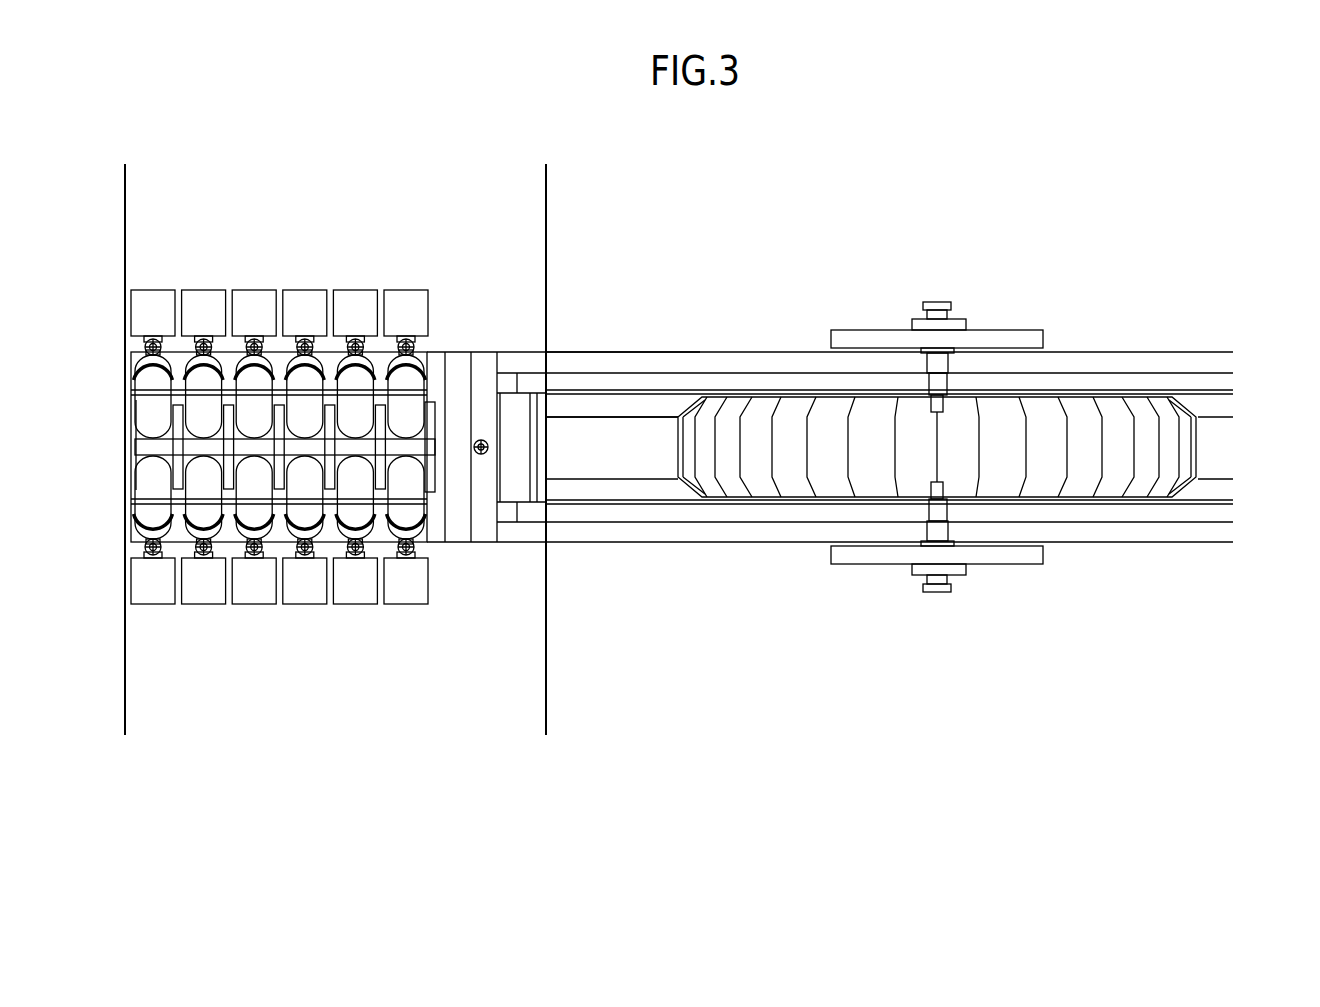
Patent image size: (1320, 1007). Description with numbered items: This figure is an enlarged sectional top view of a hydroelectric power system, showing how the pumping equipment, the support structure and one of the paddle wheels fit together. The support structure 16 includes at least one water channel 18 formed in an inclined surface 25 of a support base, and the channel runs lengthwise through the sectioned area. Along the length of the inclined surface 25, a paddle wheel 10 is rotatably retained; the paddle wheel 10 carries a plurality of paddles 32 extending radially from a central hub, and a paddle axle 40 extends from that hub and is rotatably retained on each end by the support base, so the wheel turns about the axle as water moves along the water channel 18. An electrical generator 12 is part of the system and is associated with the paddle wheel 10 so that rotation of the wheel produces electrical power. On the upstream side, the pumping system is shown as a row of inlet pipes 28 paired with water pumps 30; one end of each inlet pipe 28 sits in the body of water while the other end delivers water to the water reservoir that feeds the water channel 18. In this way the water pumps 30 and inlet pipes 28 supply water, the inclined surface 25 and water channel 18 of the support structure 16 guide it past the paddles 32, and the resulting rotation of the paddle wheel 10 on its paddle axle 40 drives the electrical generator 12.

The paddle wheel 10 is at (742, 503).
The electrical generator 12 is at (882, 330).
The support structure 16 is at (674, 335).
The water channel 18 is at (622, 447).
The inclined surface 25 is at (642, 657).
The inlet pipe 28 is at (203, 397).
The water pump 30 is at (298, 303).
The paddle 32 is at (824, 452).
The paddle axle 40 is at (936, 595).